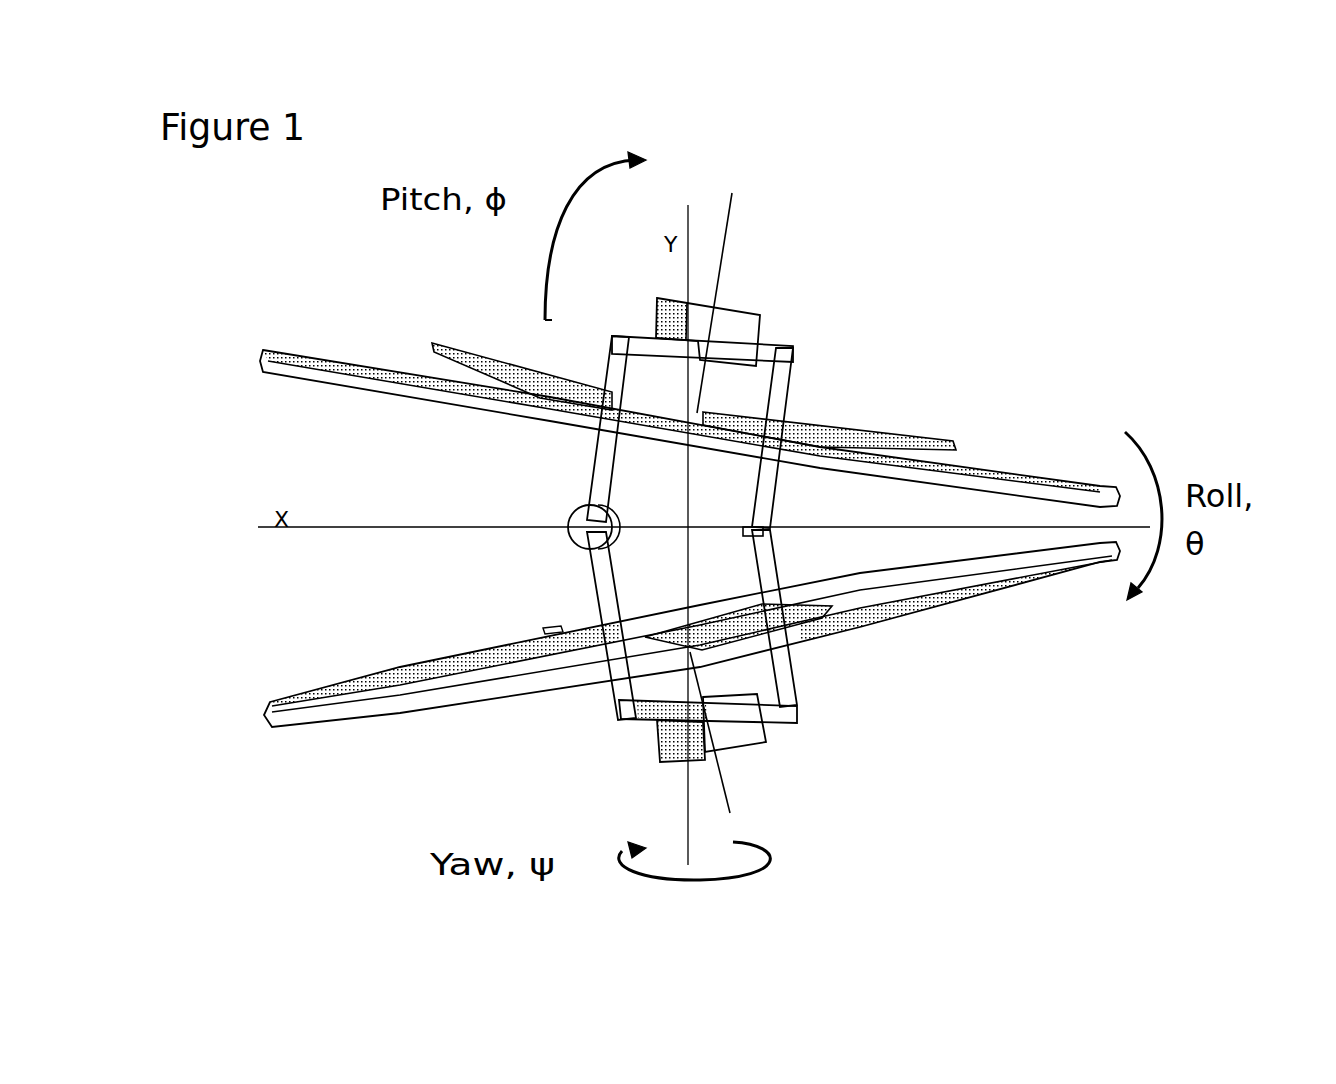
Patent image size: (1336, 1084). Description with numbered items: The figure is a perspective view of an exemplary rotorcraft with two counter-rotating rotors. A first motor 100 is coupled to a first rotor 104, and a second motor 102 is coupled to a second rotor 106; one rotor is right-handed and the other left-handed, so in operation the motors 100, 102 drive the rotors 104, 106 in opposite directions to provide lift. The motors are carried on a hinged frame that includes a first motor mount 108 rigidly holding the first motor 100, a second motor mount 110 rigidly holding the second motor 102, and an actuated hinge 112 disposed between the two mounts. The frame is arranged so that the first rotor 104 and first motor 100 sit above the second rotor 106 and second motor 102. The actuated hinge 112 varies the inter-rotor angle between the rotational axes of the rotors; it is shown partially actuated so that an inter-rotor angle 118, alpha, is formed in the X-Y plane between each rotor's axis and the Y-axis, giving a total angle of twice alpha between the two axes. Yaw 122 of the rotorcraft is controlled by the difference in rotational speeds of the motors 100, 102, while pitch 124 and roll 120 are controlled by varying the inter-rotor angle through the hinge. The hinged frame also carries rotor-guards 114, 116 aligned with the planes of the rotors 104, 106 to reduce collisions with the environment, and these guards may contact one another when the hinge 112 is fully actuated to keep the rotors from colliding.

The first motor 100 is at (752, 313).
The second motor 102 is at (767, 742).
The first rotor 104 is at (887, 427).
The second rotor 106 is at (800, 630).
The first motor mount 108 is at (603, 348).
The second motor mount 110 is at (617, 703).
The actuated hinge 112 is at (745, 533).
The rotor-guard 114 is at (262, 357).
The rotor-guard 116 is at (270, 705).
The inter-rotor angle 118 is at (725, 178).
The roll 120 is at (1157, 560).
The yaw 122 is at (630, 873).
The pitch 124 is at (578, 187).